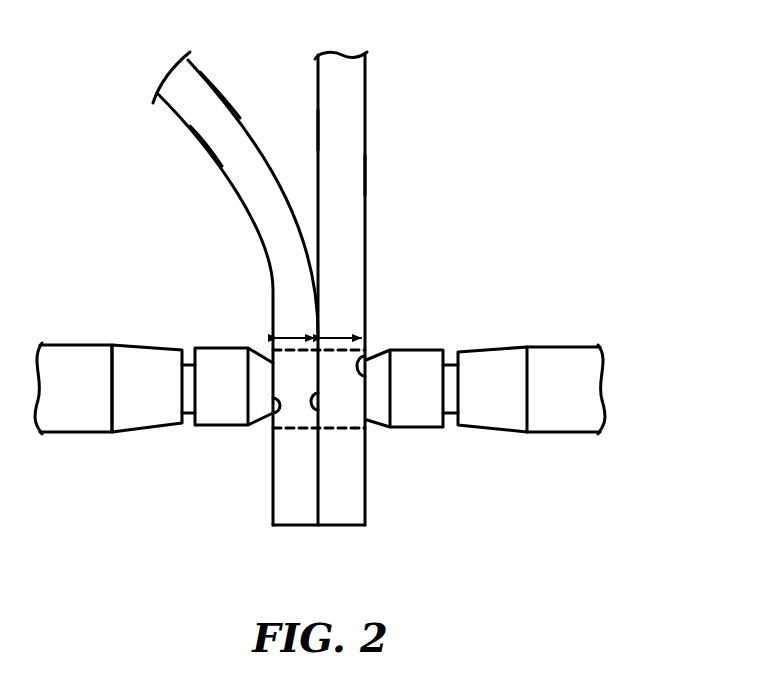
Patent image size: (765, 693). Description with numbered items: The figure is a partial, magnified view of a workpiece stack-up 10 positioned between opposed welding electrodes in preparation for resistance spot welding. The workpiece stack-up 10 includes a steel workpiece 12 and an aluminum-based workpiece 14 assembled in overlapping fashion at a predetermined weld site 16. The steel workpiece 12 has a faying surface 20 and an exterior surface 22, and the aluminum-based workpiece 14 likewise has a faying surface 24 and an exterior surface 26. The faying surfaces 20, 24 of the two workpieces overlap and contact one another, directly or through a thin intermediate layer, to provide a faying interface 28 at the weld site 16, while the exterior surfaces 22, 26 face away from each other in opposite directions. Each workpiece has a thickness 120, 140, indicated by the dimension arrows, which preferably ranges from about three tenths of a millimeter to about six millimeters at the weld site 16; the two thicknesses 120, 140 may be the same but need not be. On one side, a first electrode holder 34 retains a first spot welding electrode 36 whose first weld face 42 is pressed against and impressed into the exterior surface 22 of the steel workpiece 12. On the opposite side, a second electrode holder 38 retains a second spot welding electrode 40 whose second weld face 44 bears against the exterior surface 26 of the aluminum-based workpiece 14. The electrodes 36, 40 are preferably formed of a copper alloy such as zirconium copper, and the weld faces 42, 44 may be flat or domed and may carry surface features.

The workpiece stack-up 10 is at (317, 536).
The steel workpiece 12 is at (347, 112).
The aluminum-based workpiece 14 is at (188, 90).
The weld site 16 is at (293, 428).
The faying surface 20 is at (318, 130).
The exterior surface 22 is at (365, 175).
The faying surface 24 is at (223, 93).
The exterior surface 26 is at (210, 147).
The faying interface 28 is at (314, 411).
The first electrode holder 34 is at (497, 368).
The first spot welding electrode 36 is at (413, 437).
The second electrode holder 38 is at (140, 367).
The second spot welding electrode 40 is at (212, 436).
The first weld face 42 is at (366, 359).
The second weld face 44 is at (272, 410).
The thickness 120 is at (342, 336).
The thickness 140 is at (293, 336).